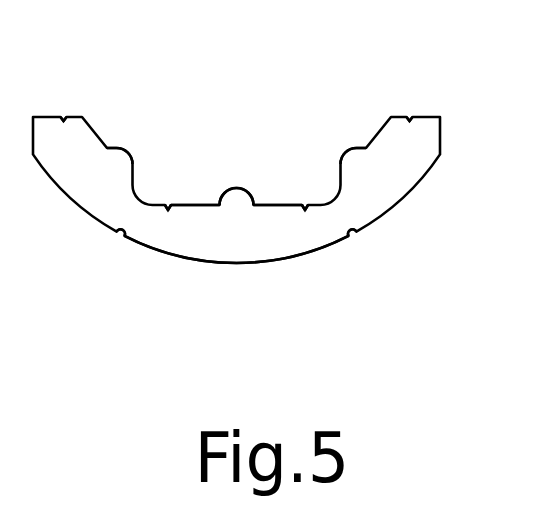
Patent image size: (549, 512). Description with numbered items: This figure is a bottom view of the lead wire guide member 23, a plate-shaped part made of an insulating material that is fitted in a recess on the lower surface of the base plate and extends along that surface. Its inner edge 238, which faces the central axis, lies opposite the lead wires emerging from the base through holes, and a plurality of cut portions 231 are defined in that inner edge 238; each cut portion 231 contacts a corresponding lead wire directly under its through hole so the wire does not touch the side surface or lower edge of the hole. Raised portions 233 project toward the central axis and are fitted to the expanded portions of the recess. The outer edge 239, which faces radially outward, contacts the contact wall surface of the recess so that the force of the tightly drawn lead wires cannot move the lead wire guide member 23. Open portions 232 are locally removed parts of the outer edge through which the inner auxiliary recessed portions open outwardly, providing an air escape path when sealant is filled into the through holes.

The lead wire guide member 23 is at (427, 138).
The cut portion 231 is at (58, 109).
The open portion 232 is at (114, 236).
The raised portion 233 is at (111, 138).
The inner edge 238 is at (276, 198).
The outer edge 239 is at (242, 272).